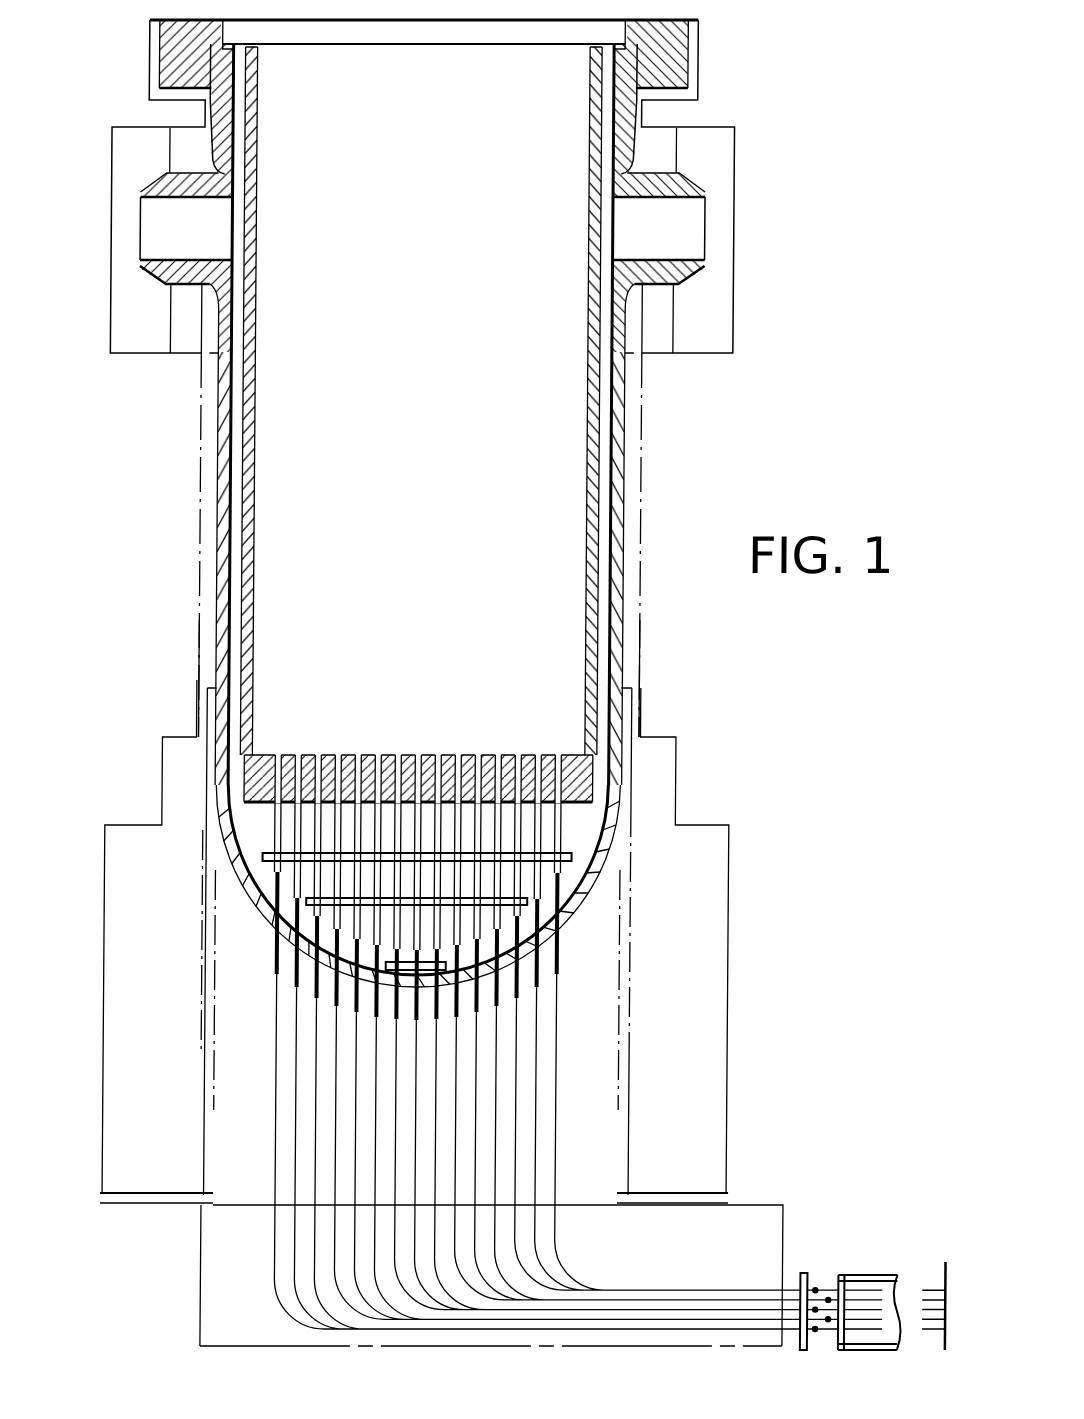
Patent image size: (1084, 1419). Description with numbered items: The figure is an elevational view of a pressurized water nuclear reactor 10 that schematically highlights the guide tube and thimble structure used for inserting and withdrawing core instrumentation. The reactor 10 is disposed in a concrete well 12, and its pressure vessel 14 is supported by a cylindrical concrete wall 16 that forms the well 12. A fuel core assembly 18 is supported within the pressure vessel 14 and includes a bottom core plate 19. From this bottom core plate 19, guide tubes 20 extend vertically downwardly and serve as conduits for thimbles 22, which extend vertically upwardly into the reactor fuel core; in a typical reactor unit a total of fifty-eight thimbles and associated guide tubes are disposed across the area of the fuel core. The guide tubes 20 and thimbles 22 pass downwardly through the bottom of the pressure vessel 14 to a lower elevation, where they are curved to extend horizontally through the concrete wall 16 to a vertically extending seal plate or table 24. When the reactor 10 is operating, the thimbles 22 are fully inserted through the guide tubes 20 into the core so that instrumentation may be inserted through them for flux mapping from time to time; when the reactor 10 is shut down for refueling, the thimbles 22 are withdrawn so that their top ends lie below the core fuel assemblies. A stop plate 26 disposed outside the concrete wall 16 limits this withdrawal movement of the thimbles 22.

The pressurized water nuclear reactor 10 is at (441, 328).
The concrete well 12 is at (604, 972).
The pressure vessel 14 is at (216, 493).
The cylindrical concrete wall 16 is at (150, 843).
The fuel core assembly 18 is at (545, 535).
The bottom core plate 19 is at (268, 754).
The guide tubes 20 is at (273, 828).
The thimbles 22 is at (279, 1080).
The seal plate or table 24 is at (841, 1284).
The stop plate 26 is at (949, 1272).